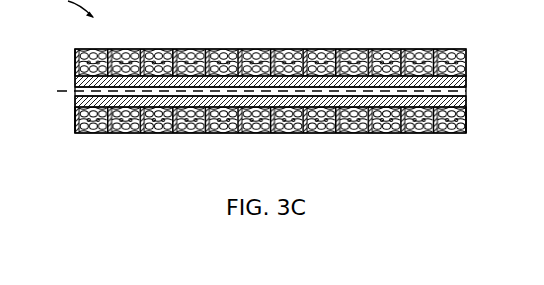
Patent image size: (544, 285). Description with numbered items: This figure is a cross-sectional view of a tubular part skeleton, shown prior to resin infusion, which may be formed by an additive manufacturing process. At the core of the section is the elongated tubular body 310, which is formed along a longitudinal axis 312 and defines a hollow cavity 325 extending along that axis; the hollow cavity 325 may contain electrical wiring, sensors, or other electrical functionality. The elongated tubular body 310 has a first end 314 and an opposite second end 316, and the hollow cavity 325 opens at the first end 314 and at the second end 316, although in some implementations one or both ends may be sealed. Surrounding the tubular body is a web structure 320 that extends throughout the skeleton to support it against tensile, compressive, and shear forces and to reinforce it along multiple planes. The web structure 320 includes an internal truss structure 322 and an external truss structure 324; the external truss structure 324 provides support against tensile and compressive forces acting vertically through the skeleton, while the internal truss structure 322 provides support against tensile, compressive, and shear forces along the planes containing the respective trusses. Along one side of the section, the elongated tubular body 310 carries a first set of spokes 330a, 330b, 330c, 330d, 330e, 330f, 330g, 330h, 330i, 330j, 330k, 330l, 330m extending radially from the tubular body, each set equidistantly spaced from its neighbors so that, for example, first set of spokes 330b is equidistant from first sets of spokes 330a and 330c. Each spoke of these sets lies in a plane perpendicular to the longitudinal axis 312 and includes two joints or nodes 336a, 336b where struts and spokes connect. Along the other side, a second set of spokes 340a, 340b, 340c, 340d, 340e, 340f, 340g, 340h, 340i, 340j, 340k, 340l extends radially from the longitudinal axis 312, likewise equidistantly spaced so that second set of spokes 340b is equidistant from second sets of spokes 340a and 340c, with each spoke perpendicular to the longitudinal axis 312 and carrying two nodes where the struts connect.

The elongated tubular body 310 is at (468, 96).
The longitudinal axis 312 is at (468, 88).
The first end 314 is at (75, 63).
The second end 316 is at (468, 67).
The web structure 320 is at (506, 108).
The internal truss structure 322 is at (477, 108).
The external truss structure 324 is at (477, 119).
The hollow cavity 325 is at (75, 87).
The node 336a is at (75, 113).
The node 336b is at (75, 126).
The second set of spokes 340a is at (92, 48).
The second set of spokes 340b is at (122, 48).
The second set of spokes 340c is at (159, 48).
The second set of spokes 340d is at (190, 48).
The second set of spokes 340e is at (224, 48).
The second set of spokes 340f is at (254, 48).
The second set of spokes 340g is at (287, 48).
The second set of spokes 340h is at (317, 48).
The second set of spokes 340i is at (351, 48).
The second set of spokes 340j is at (384, 48).
The second set of spokes 340k is at (416, 48).
The second set of spokes 340l is at (449, 48).
The first set of spokes 330a is at (77, 134).
The first set of spokes 330b is at (108, 134).
The first set of spokes 330c is at (140, 134).
The first set of spokes 330d is at (173, 134).
The first set of spokes 330e is at (205, 134).
The first set of spokes 330f is at (238, 134).
The first set of spokes 330g is at (270, 134).
The first set of spokes 330h is at (303, 134).
The first set of spokes 330i is at (336, 134).
The first set of spokes 330j is at (368, 134).
The first set of spokes 330k is at (401, 134).
The first set of spokes 330l is at (433, 134).
The first set of spokes 330m is at (467, 134).